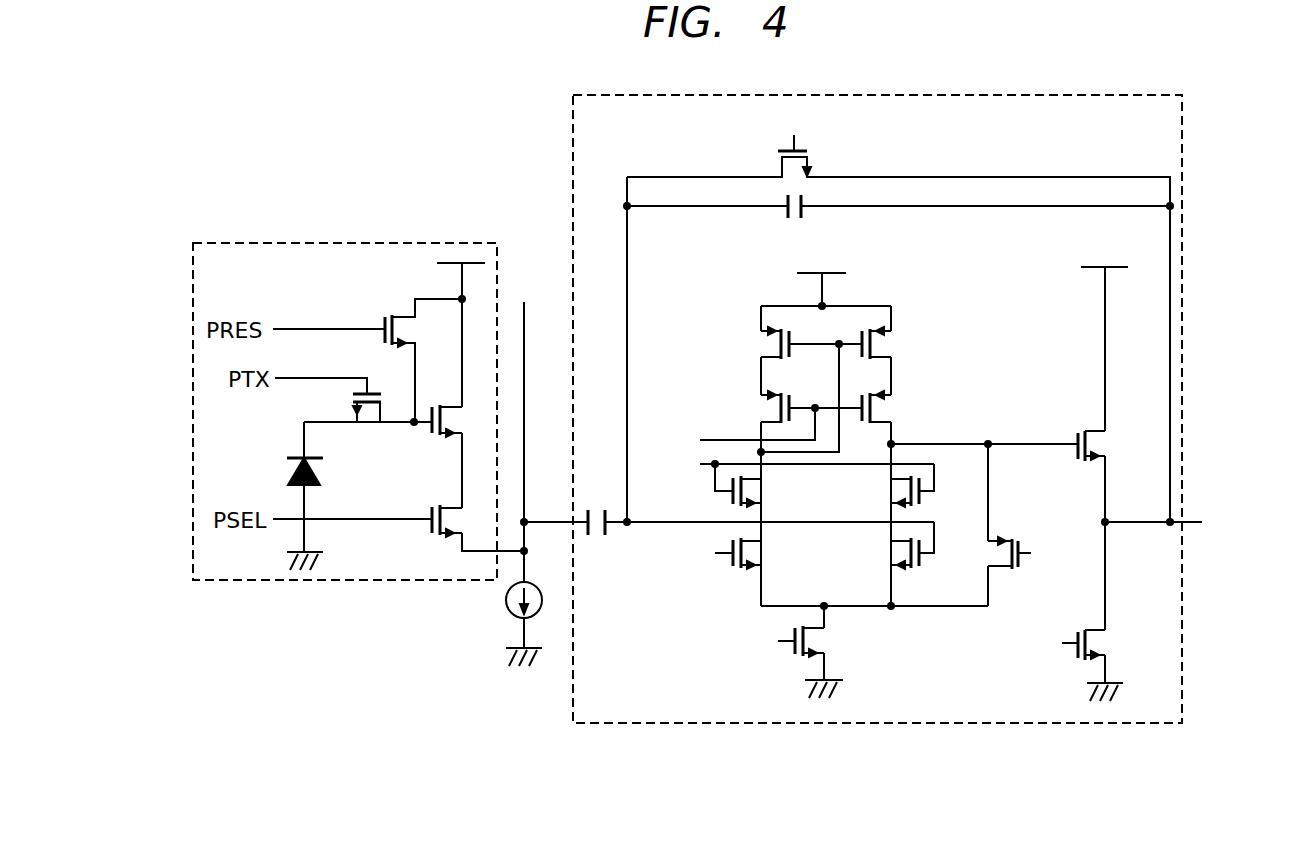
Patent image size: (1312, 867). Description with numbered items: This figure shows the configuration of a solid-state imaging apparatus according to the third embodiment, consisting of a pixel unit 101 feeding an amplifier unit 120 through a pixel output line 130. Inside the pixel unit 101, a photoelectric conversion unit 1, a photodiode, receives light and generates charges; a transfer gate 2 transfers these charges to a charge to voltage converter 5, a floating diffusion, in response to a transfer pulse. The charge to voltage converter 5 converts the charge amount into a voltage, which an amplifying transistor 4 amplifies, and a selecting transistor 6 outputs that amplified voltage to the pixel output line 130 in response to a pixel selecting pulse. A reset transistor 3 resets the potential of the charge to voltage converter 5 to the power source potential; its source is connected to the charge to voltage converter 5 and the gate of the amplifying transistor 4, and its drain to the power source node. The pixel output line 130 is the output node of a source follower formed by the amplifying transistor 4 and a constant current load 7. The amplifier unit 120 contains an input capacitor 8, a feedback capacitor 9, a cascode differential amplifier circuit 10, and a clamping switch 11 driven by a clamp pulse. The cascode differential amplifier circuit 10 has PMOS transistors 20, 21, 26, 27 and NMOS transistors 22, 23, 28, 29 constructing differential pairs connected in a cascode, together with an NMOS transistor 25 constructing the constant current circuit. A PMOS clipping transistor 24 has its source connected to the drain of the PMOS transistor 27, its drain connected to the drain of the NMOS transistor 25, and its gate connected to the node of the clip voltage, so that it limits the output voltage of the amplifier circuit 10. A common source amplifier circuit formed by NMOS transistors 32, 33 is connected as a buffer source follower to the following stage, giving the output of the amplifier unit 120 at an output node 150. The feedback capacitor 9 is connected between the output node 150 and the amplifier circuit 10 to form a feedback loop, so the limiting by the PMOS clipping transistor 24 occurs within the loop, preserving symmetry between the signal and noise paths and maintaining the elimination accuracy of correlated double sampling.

The photoelectric conversion unit 1 is at (292, 476).
The transfer gate 2 is at (364, 416).
The reset transistor 3 is at (384, 317).
The amplifying transistor 4 is at (456, 416).
The charge to voltage converter 5 is at (402, 426).
The selecting transistor 6 is at (431, 532).
The constant current load 7 is at (505, 600).
The input capacitor 8 is at (604, 538).
The feedback capacitor 9 is at (804, 216).
The cascode differential amplifier circuit 10 is at (918, 640).
The clamping switch 11 is at (781, 170).
The PMOS transistor 20 is at (760, 346).
The PMOS transistor 21 is at (894, 344).
The NMOS transistor 22 is at (730, 566).
The NMOS transistor 23 is at (890, 556).
The PMOS clipping transistor 24 is at (1014, 575).
The NMOS transistor 25 is at (832, 641).
The PMOS transistor 26 is at (762, 411).
The PMOS transistor 27 is at (894, 410).
The NMOS transistor 28 is at (760, 491).
The NMOS transistor 29 is at (888, 490).
The NMOS transistor 32 is at (1108, 643).
The NMOS transistor 33 is at (1104, 446).
The pixel unit 101 is at (441, 243).
The amplifier unit 120 is at (573, 226).
The pixel output line 130 is at (552, 522).
The output node 150 is at (1200, 521).